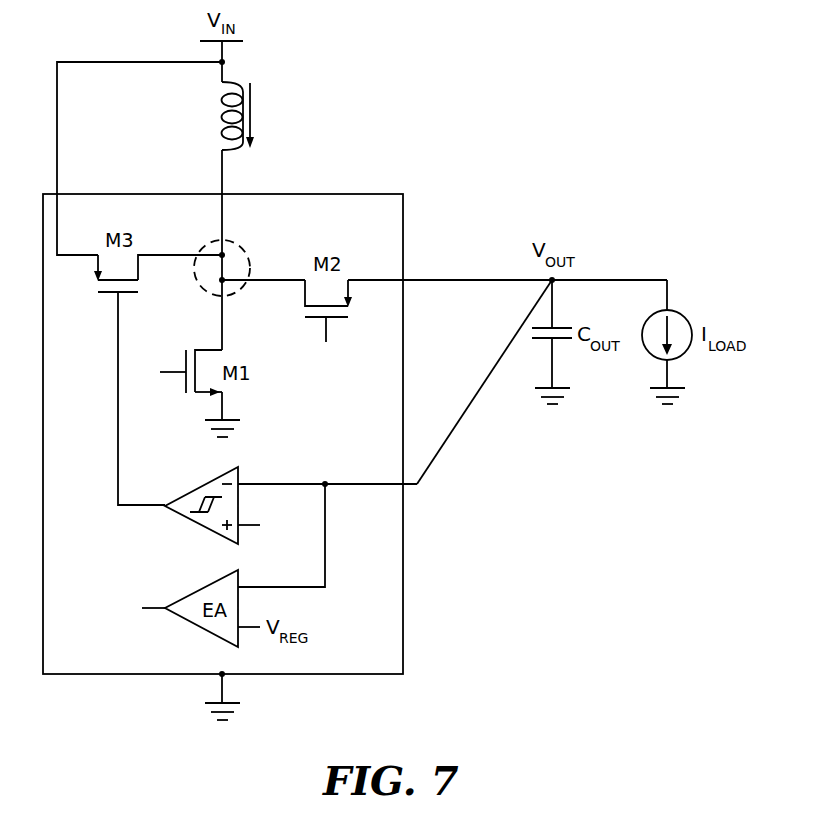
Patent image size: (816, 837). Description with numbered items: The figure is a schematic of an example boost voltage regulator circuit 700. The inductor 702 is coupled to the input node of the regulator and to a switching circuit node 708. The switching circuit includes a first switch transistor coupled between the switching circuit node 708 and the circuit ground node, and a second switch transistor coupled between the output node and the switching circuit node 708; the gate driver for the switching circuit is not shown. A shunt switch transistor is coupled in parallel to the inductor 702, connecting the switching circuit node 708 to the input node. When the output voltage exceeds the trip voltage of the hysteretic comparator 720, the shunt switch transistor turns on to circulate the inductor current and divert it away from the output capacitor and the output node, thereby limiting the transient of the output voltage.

The boost voltage regulator circuit 700 is at (566, 74).
The inductor 702 is at (230, 153).
The switching circuit node 708 is at (247, 249).
The hysteretic comparator 720 is at (203, 486).